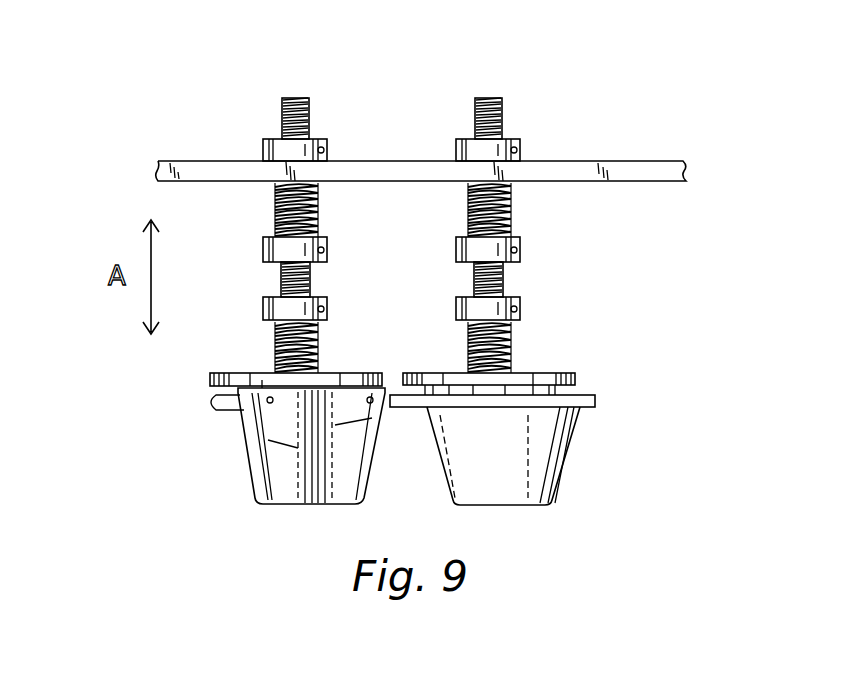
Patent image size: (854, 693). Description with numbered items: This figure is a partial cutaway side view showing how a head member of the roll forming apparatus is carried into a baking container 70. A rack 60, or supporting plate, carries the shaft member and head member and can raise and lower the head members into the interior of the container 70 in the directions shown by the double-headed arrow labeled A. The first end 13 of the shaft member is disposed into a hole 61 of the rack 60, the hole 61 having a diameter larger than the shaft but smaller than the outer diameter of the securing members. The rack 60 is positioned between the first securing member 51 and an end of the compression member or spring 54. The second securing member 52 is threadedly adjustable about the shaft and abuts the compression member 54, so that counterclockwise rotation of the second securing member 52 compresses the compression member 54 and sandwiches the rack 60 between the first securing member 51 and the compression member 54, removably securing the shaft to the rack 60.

The first end 13 is at (507, 88).
The first securing member 51 is at (265, 139).
The second securing member 52 is at (327, 248).
The compression member 54 is at (276, 214).
The rack 60 is at (640, 160).
The hole 61 is at (508, 172).
The container 70 is at (379, 465).